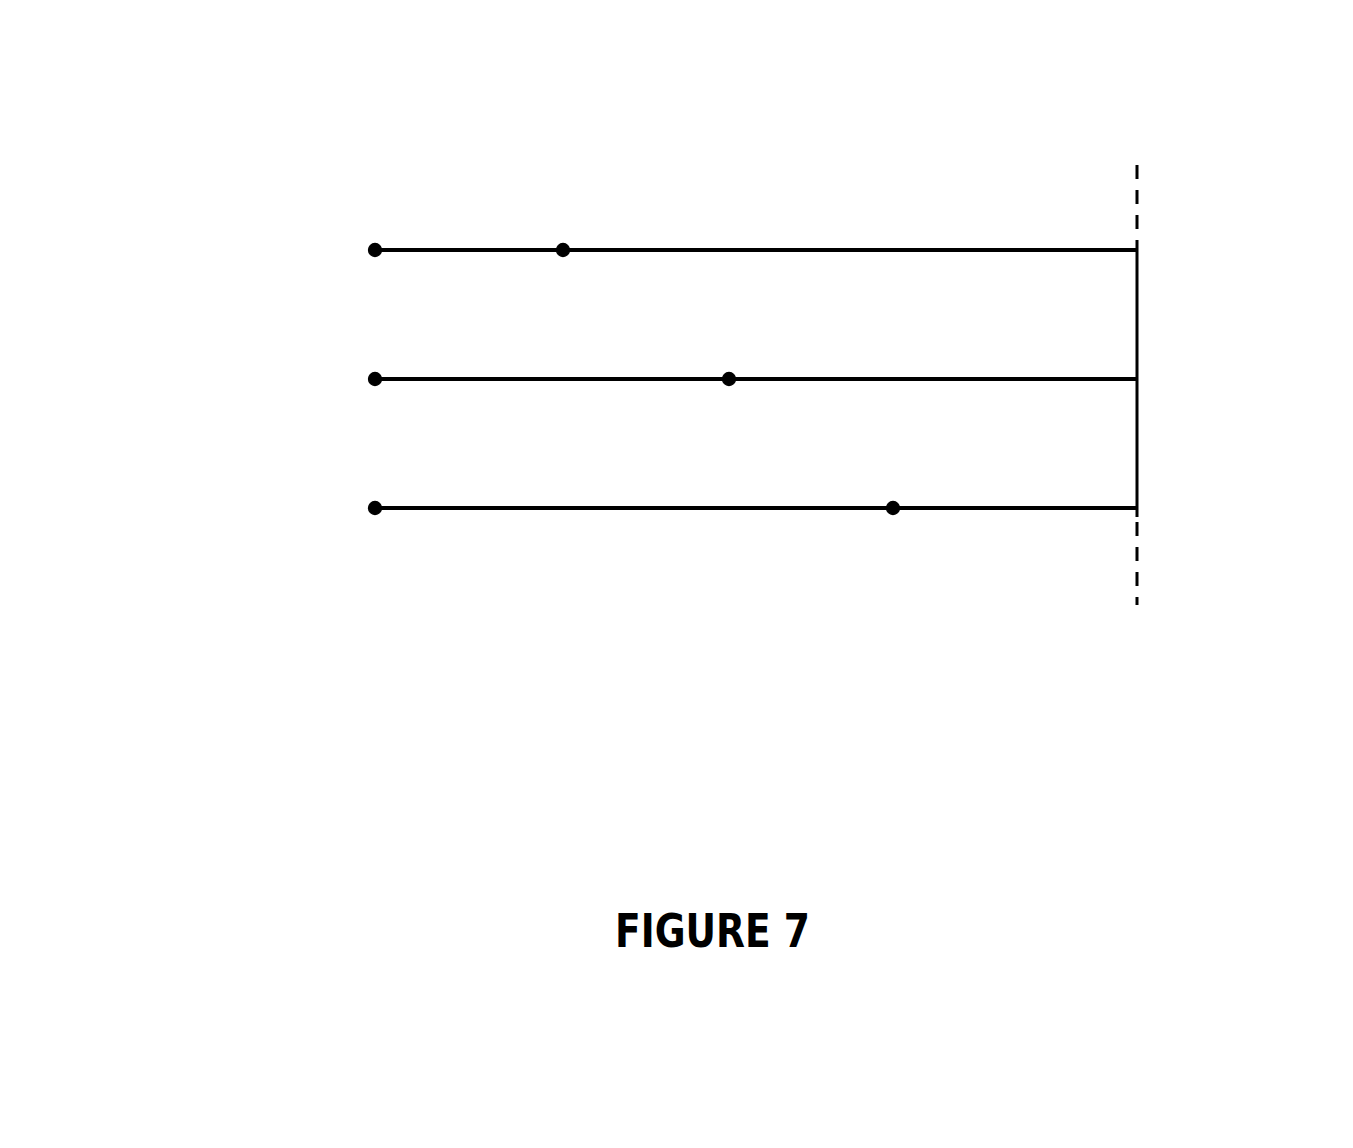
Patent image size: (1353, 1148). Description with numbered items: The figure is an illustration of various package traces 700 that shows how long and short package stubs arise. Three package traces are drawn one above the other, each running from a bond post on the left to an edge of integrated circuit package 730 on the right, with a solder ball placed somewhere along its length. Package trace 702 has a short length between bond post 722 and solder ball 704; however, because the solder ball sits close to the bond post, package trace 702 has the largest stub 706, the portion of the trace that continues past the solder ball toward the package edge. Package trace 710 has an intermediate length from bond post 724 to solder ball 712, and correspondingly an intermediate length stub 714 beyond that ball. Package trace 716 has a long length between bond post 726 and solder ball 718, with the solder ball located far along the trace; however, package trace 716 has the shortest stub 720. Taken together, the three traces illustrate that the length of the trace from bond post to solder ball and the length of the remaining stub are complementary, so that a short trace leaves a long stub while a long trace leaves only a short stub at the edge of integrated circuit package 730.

The illustration of package traces 700 is at (529, 716).
The package trace 702 is at (368, 252).
The solder ball 704 is at (563, 245).
The stub 706 is at (855, 248).
The package trace 710 is at (368, 381).
The solder ball 712 is at (729, 376).
The stub 714 is at (893, 377).
The package trace 716 is at (368, 510).
The solder ball 718 is at (889, 514).
The stub 720 is at (1065, 511).
The bond post 722 is at (382, 200).
The bond post 724 is at (355, 404).
The bond post 726 is at (362, 527).
The edge of integrated circuit package 730 is at (1140, 320).